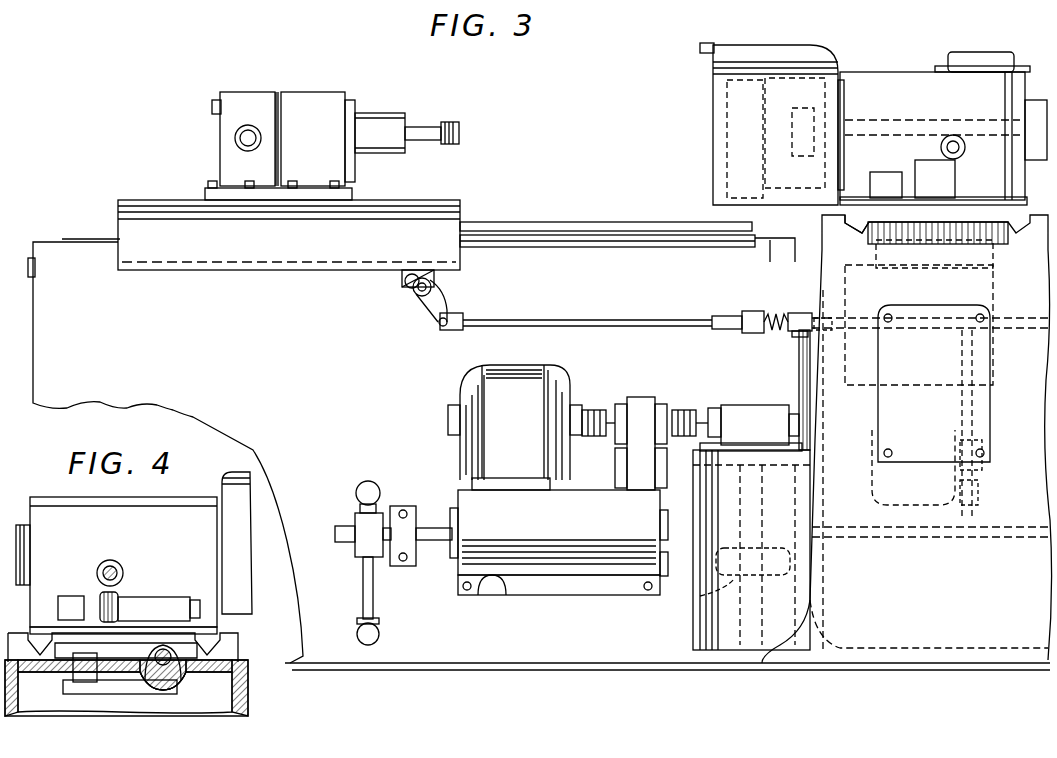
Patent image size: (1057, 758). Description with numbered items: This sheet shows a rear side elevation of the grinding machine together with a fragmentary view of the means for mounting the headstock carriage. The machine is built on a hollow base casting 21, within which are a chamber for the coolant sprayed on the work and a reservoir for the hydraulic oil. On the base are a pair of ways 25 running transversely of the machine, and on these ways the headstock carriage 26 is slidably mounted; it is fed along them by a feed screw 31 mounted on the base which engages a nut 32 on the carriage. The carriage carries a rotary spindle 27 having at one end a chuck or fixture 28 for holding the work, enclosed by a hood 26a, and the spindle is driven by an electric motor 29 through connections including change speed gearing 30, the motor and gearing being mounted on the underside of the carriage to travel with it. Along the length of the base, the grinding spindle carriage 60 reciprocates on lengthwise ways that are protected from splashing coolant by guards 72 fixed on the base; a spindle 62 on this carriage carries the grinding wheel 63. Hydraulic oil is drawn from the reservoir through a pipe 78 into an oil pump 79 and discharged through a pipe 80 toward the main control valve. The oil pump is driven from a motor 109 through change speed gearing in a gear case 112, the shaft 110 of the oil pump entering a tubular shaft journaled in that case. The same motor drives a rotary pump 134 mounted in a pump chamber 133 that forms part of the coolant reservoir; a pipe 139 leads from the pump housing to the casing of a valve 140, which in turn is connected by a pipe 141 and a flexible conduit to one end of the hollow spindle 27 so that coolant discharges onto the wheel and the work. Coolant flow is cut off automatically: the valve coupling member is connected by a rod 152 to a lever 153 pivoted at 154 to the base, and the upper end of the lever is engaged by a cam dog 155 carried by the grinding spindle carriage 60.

In FIG. 3, the hollow base casting 21 is at (610, 645).
In FIG. 4, the hollow base casting 21 is at (230, 700).
In FIG. 3, the ways 25 is at (845, 228).
In FIG. 4, the ways 25 is at (218, 653).
In FIG. 3, the headstock carriage 26 is at (875, 92).
In FIG. 4, the headstock carriage 26 is at (52, 515).
In FIG. 3, the hood 26a is at (720, 118).
In FIG. 4, the hood 26a is at (235, 556).
In FIG. 3, the rotary spindle 27 is at (978, 122).
In FIG. 3, the chuck or fixture 28 is at (748, 66).
In FIG. 3, the electric motor 29 is at (958, 486).
In FIG. 3, the change speed gearing 30 is at (982, 393).
In FIG. 4, the feed screw 31 is at (163, 667).
In FIG. 4, the nut 32 is at (180, 670).
In FIG. 3, the grinding spindle carriage 60 is at (307, 102).
In FIG. 3, the spindle 62 is at (418, 128).
In FIG. 3, the grinding wheel 63 is at (453, 127).
In FIG. 3, the guards 72 is at (600, 222).
In FIG. 3, the pipe 78 is at (375, 604).
In FIG. 3, the oil pump 79 is at (368, 535).
In FIG. 3, the pipe 80 is at (360, 490).
In FIG. 3, the motor 109 is at (495, 392).
In FIG. 3, the shaft of the oil pump 110 is at (418, 526).
In FIG. 3, the gear case 112 is at (560, 533).
In FIG. 3, the pump chamber 133 is at (718, 530).
In FIG. 3, the rotary pump 134 is at (690, 592).
In FIG. 3, the pipe 139 is at (797, 370).
In FIG. 3, the valve 140 is at (790, 314).
In FIG. 3, the pipe 141 is at (920, 328).
In FIG. 3, the rod 152 is at (603, 318).
In FIG. 3, the lever 153 is at (453, 307).
In FIG. 3, the pivot 154 is at (432, 292).
In FIG. 3, the cam dog 155 is at (412, 274).